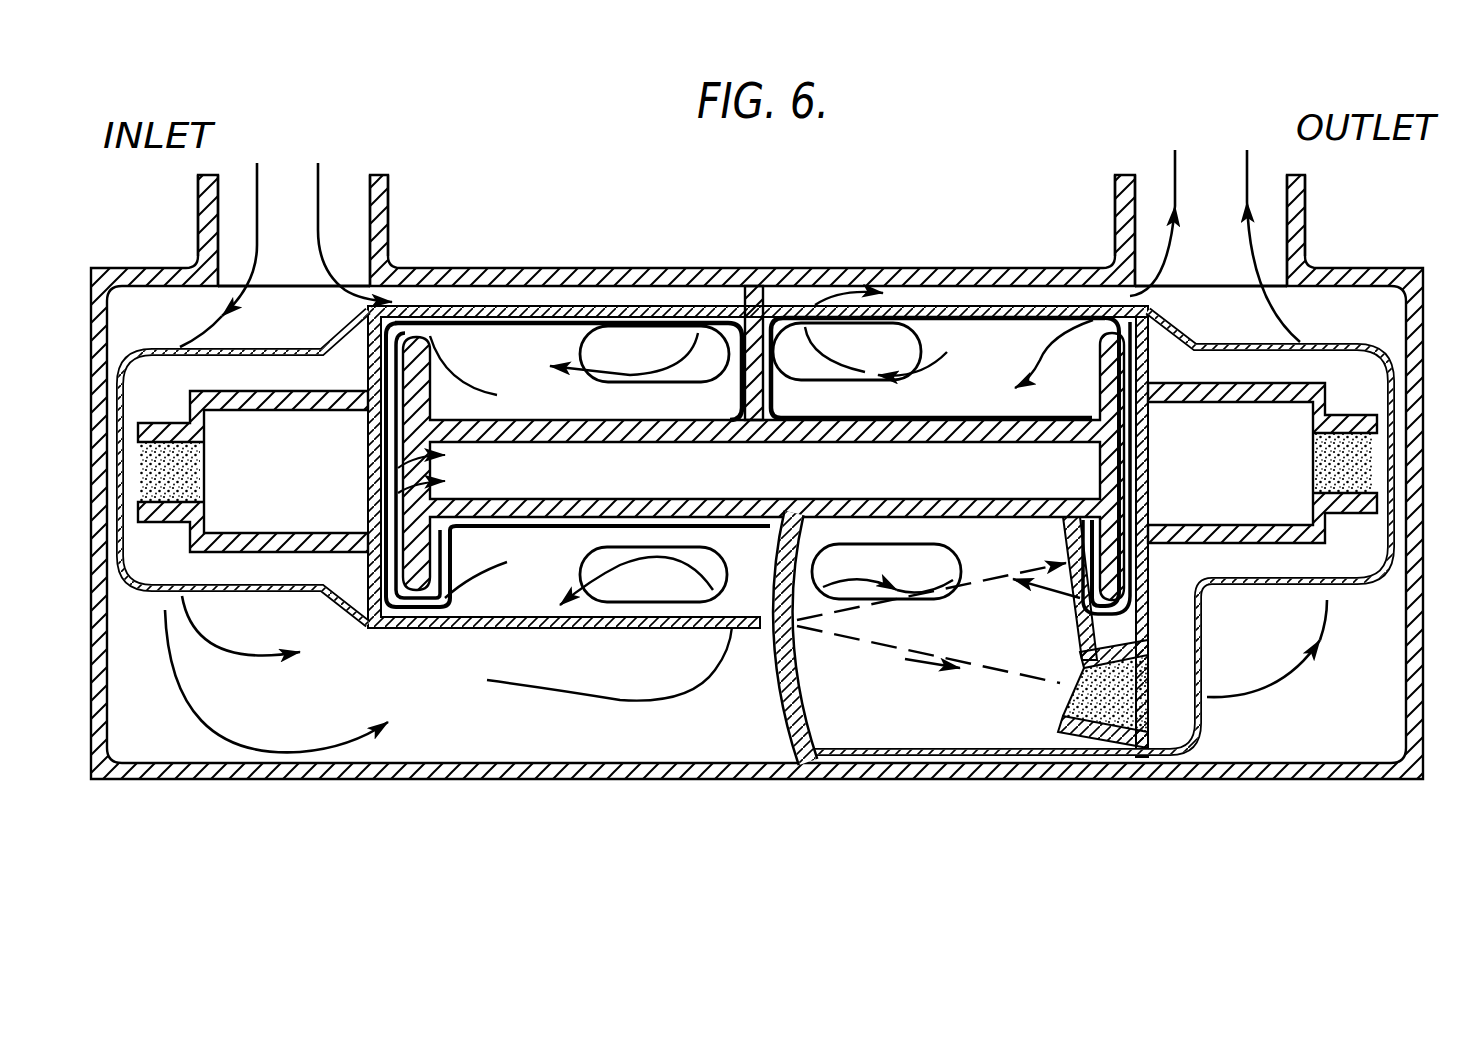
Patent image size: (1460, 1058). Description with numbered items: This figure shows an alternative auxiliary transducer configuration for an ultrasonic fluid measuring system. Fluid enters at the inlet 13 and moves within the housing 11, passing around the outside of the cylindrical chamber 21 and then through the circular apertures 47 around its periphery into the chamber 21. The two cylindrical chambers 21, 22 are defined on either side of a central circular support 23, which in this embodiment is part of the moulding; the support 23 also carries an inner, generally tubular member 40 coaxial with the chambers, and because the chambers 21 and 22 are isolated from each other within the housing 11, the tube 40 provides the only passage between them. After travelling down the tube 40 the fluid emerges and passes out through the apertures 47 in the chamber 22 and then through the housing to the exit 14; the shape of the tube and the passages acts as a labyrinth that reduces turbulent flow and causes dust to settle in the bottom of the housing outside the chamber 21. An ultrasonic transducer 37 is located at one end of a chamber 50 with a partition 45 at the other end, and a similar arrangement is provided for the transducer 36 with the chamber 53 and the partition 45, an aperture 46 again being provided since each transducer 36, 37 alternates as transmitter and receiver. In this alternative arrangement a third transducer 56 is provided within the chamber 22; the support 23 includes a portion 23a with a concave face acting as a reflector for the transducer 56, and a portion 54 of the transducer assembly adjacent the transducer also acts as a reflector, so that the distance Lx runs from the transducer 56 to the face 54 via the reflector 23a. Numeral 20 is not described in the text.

The housing 11 is at (658, 273).
The inlet 13 is at (383, 204).
The exit 14 is at (1124, 184).
The first chamber 20 is at (481, 302).
The cylindrical chamber 21 is at (480, 595).
The cylindrical chamber 22 is at (1005, 323).
The central circular support 23 is at (752, 300).
The portion of support having a concave face 23a is at (797, 707).
The ultrasonic transducer 36 is at (1314, 465).
The ultrasonic transducer 37 is at (198, 468).
The inner tubular member 40 is at (525, 519).
The partition 45 is at (378, 426).
The aperture 46 is at (372, 481).
The circular apertures 47 is at (605, 332).
The chamber 50 is at (276, 515).
The chamber 53 is at (1287, 508).
The portion of the transducer assembly 54 is at (1082, 583).
The third transducer 56 is at (1078, 694).